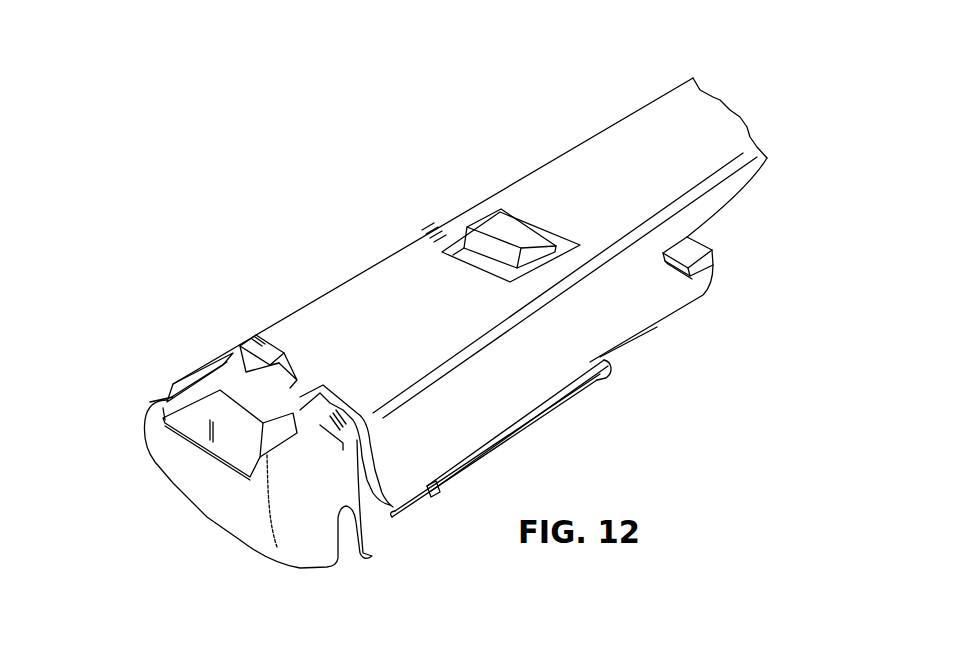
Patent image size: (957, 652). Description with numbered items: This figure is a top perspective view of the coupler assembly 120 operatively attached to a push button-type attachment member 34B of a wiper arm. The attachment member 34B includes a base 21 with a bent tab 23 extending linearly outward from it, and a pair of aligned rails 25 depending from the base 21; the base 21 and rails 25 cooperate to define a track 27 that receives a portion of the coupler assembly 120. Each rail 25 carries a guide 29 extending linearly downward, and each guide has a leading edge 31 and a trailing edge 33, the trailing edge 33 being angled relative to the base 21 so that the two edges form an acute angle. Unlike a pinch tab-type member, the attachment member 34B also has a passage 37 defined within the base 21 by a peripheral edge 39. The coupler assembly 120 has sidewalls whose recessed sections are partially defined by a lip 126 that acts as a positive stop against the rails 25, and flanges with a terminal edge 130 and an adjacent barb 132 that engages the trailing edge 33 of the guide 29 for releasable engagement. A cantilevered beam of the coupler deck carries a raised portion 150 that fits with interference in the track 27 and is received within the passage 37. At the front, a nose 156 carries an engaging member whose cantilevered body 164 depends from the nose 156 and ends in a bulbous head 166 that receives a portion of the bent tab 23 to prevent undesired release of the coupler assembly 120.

The base 21 is at (583, 173).
The bent tab 23 is at (289, 390).
The rails 25 is at (517, 383).
The track 27 is at (370, 537).
The guide 29 is at (672, 300).
The leading edge 31 is at (657, 327).
The trailing edge 33 is at (708, 285).
The push button-type attachment member 34B is at (697, 71).
The passage 37 is at (452, 245).
The peripheral edge 39 is at (455, 252).
The coupler assembly 120 is at (130, 447).
The lip 126 is at (497, 450).
The terminal edge 130 is at (712, 247).
The barb 132 is at (714, 265).
The raised portion 150 is at (490, 223).
The nose 156 is at (220, 487).
The cantilevered body 164 is at (190, 400).
The bulbous head 166 is at (235, 394).